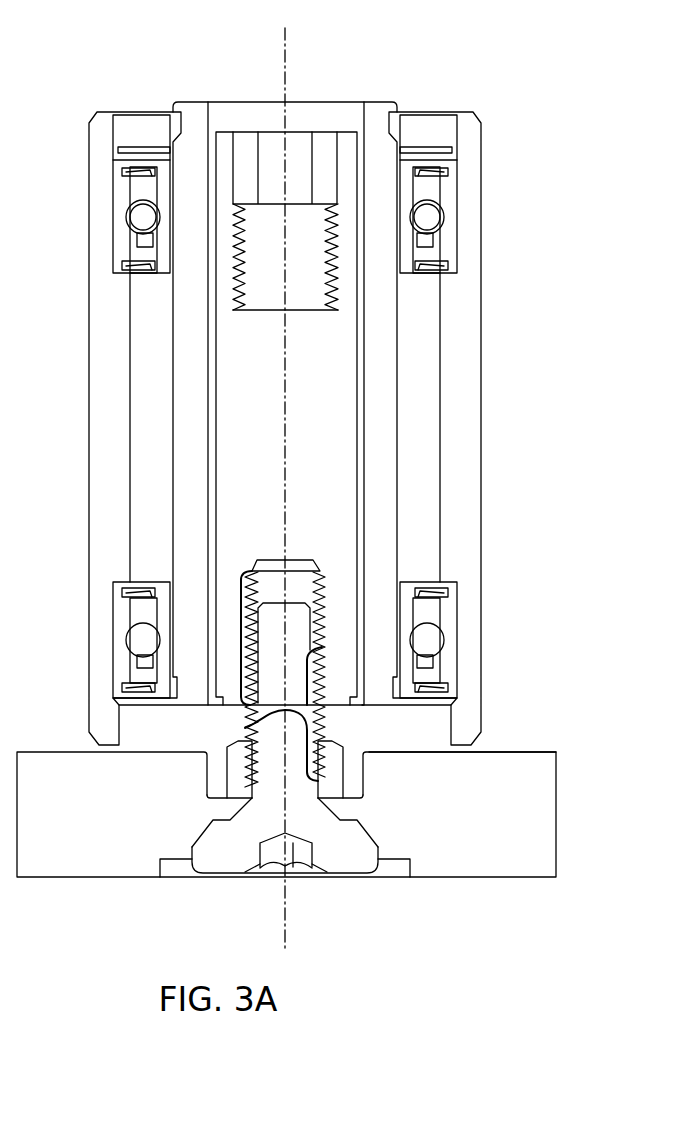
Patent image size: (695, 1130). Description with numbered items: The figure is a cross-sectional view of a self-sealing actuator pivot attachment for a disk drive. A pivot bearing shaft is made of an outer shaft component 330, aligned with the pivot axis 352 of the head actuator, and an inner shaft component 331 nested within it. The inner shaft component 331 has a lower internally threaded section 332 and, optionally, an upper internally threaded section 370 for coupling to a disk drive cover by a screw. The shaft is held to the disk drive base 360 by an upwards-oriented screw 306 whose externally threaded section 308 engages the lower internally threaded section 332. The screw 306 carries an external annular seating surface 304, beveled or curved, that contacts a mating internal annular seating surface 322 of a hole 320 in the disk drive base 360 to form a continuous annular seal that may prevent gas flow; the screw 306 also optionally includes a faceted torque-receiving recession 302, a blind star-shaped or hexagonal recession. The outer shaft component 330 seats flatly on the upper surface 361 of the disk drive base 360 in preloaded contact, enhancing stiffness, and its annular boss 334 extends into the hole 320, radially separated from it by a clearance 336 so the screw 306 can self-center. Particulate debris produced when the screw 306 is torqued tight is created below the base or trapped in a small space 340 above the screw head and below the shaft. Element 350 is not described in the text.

The faceted torque-receiving recession 302 is at (300, 852).
The external annular seating surface 304 is at (383, 848).
The upwards-oriented screw 306 is at (218, 852).
The externally threaded section 308 is at (245, 728).
The hole 320 is at (395, 867).
The internal annular seating surface 322 is at (183, 845).
The outer shaft component 330 is at (387, 332).
The inner shaft component 331 is at (343, 392).
The lower internally threaded section 332 is at (241, 638).
The annular boss 334 is at (350, 767).
The clearance 336 is at (365, 800).
The small space 340 is at (230, 807).
The housing 350 is at (465, 275).
The pivot axis 352 is at (287, 61).
The disk drive base 360 is at (505, 860).
The upper surface 361 is at (495, 750).
The upper internally threaded section 370 is at (243, 205).